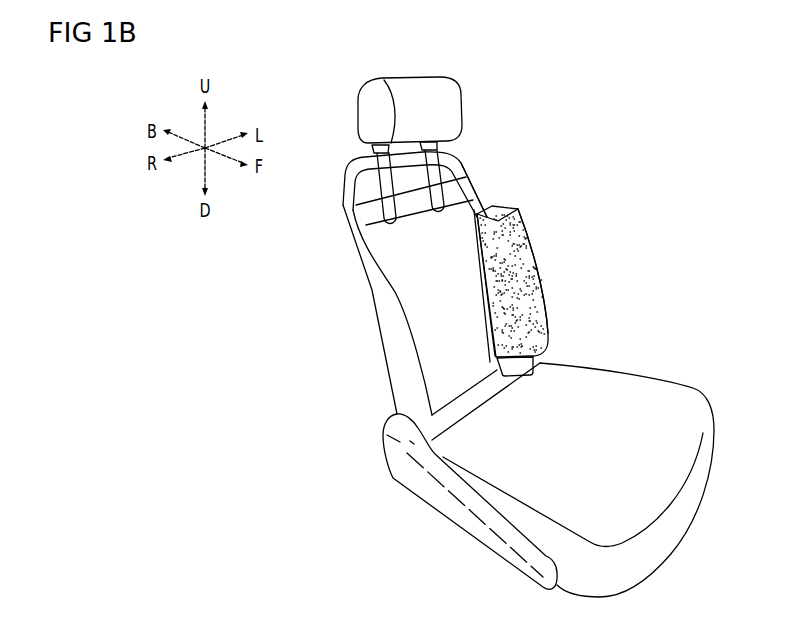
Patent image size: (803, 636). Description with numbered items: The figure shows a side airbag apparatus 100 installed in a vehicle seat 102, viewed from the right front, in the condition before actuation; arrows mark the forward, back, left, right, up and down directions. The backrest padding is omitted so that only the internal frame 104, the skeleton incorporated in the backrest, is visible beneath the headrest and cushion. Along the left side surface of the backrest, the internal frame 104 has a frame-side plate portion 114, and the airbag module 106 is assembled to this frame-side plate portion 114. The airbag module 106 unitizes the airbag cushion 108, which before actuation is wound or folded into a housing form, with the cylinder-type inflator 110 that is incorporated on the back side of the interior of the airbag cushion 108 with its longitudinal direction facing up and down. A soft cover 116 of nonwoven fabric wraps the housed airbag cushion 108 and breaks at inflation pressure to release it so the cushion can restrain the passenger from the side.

The side airbag apparatus 100 is at (514, 108).
The seat 102 is at (388, 80).
The internal frame 104 is at (355, 165).
The airbag module 106 is at (528, 238).
The airbag cushion 108 is at (538, 273).
The inflator 110 is at (478, 282).
The frame-side plate portion 114 is at (485, 203).
The soft cover 116 is at (533, 319).